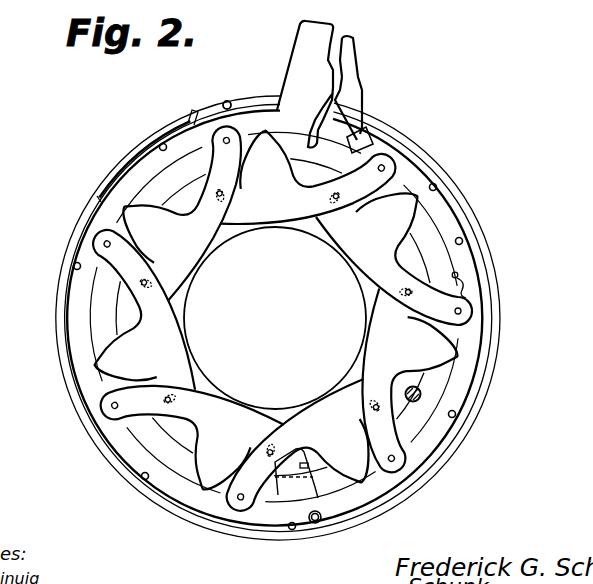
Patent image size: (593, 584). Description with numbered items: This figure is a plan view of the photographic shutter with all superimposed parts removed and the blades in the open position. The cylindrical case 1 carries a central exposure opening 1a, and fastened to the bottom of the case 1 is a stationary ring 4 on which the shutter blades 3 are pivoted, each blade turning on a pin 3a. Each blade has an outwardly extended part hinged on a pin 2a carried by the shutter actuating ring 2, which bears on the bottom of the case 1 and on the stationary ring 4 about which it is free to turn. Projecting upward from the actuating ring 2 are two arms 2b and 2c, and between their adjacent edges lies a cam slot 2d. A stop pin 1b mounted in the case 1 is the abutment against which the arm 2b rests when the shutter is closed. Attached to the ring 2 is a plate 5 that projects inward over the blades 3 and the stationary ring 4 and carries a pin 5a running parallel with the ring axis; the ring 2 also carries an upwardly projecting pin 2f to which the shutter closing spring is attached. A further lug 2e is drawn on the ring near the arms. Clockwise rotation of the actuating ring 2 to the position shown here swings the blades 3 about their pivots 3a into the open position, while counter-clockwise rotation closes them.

The cylindrical case 1 is at (95, 192).
The central exposure opening 1a is at (340, 352).
The stop pin 1b is at (227, 101).
The shutter actuating ring 2 is at (427, 222).
The pins 2a is at (225, 133).
The upwardly extending arm 2b is at (303, 42).
The upwardly extending arm 2c is at (349, 53).
The cam slot 2d is at (340, 83).
The stop lug 2e is at (360, 142).
The upwardly projecting pin 2f is at (461, 275).
The shutter blades 3 is at (112, 365).
The pins 3a is at (143, 278).
The ring 4 is at (412, 259).
The plate 5 is at (308, 493).
The pin 5a is at (302, 470).